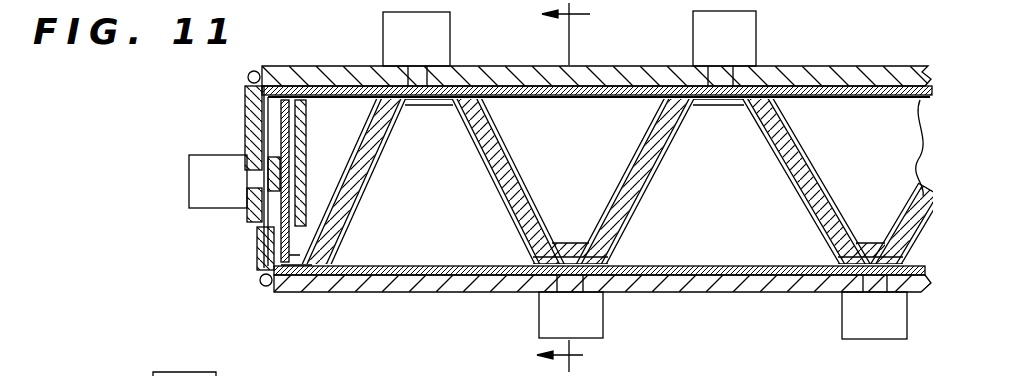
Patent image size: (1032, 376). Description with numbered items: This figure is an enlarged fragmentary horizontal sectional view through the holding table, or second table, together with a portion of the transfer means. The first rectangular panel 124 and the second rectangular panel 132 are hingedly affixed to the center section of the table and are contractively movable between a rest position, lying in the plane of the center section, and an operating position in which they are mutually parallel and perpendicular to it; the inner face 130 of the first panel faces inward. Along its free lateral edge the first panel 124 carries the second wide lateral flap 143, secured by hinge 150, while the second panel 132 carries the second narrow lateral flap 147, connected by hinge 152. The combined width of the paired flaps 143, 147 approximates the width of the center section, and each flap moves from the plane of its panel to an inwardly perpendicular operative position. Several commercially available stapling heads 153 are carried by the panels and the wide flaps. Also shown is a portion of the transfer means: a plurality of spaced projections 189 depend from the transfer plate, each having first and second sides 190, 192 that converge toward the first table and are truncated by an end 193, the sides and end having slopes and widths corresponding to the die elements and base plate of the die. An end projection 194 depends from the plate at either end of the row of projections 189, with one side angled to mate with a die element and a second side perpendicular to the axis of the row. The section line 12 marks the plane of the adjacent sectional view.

The section line 12- 12 is at (635, 24).
The first rectangular panel 124 is at (493, 66).
The inner face 130 is at (590, 98).
The second rectangular panel 132 is at (680, 292).
The second wide lateral flap 143 is at (244, 130).
The second narrow lateral flap 147 is at (256, 242).
The hinge 150 is at (248, 74).
The hinge 152 is at (260, 280).
The stapling head 153 is at (233, 190).
The projection 189 is at (527, 185).
The first side 190 is at (648, 148).
The second side 192 is at (494, 140).
The end 193 is at (569, 242).
The end projection 194 is at (340, 160).